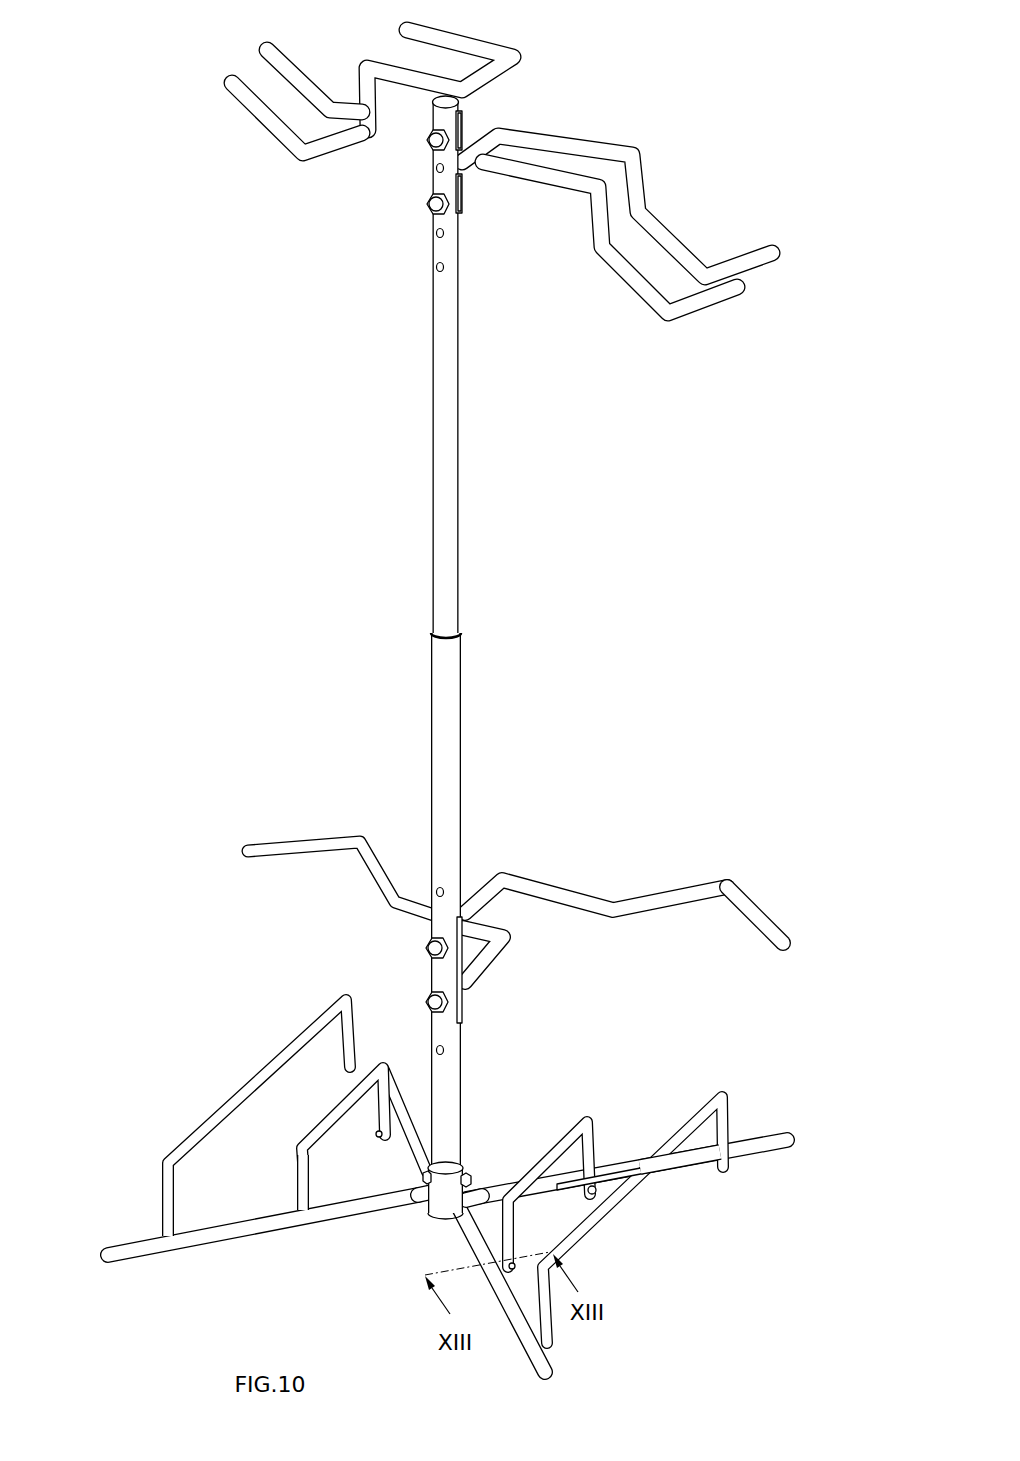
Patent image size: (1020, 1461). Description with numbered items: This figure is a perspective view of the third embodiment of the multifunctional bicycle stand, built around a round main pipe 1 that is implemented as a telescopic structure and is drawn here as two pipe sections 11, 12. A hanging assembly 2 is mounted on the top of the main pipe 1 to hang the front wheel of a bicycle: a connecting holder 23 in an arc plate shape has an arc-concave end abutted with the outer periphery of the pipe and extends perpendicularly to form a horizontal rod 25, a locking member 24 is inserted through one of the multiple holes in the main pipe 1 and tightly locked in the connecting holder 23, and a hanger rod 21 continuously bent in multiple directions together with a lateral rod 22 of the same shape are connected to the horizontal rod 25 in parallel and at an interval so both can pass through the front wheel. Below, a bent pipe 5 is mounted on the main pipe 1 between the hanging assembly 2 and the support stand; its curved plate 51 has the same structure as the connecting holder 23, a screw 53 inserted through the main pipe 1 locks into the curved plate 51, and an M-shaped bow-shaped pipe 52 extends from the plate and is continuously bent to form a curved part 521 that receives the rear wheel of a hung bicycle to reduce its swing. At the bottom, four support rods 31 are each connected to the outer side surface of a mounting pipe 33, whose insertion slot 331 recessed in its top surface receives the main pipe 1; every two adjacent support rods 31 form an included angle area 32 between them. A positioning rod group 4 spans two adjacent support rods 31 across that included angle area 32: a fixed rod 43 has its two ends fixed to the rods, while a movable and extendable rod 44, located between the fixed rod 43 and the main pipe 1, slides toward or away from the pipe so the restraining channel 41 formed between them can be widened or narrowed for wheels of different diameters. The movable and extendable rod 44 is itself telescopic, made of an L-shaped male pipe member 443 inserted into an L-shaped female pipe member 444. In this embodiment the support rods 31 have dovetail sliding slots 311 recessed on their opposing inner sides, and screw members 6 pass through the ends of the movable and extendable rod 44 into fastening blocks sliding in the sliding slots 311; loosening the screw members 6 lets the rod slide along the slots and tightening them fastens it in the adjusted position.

The main pipe 1 is at (364, 634).
The upper pole tube 11 is at (437, 525).
The lower pole tube 12 is at (437, 662).
The hanging assembly 2 is at (519, 211).
The hanger rod 21 is at (600, 148).
The lateral rod 22 is at (635, 290).
The connecting holder 23 is at (461, 205).
The locking member 24 is at (437, 205).
The horizontal rod 25 is at (500, 140).
The support rod 31 is at (380, 1063).
The sliding slot 311 is at (680, 1170).
The included angle area 32 is at (513, 1198).
The mounting pipe 33 is at (435, 1232).
The insertion slot 331 is at (455, 1168).
The positioning rod group 4 is at (477, 1135).
The restraining channel 41 is at (255, 1077).
The fixed rod 43 is at (330, 1010).
The movable and extendable rod 44 is at (255, 1121).
The male pipe member 443 is at (303, 1175).
The female pipe member 444 is at (337, 1105).
The bent pipe 5 is at (515, 882).
The curved plate 51 is at (463, 922).
The bow-shaped pipe 52 is at (624, 897).
The curved part 521 is at (716, 914).
The screw 53 is at (437, 945).
The screw member 6 is at (605, 1188).